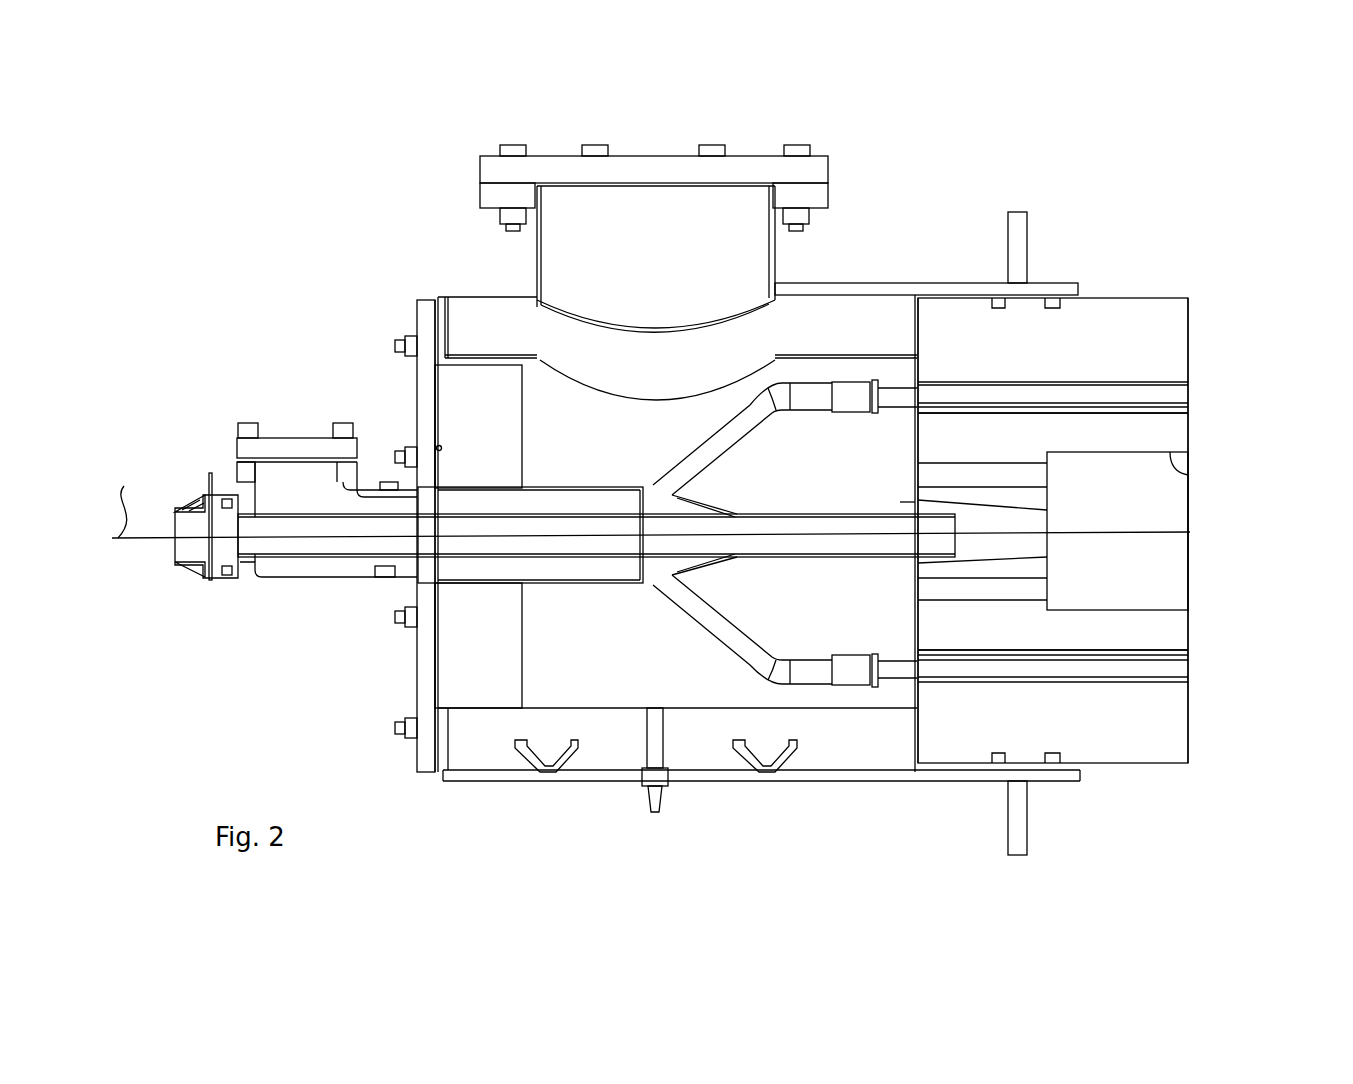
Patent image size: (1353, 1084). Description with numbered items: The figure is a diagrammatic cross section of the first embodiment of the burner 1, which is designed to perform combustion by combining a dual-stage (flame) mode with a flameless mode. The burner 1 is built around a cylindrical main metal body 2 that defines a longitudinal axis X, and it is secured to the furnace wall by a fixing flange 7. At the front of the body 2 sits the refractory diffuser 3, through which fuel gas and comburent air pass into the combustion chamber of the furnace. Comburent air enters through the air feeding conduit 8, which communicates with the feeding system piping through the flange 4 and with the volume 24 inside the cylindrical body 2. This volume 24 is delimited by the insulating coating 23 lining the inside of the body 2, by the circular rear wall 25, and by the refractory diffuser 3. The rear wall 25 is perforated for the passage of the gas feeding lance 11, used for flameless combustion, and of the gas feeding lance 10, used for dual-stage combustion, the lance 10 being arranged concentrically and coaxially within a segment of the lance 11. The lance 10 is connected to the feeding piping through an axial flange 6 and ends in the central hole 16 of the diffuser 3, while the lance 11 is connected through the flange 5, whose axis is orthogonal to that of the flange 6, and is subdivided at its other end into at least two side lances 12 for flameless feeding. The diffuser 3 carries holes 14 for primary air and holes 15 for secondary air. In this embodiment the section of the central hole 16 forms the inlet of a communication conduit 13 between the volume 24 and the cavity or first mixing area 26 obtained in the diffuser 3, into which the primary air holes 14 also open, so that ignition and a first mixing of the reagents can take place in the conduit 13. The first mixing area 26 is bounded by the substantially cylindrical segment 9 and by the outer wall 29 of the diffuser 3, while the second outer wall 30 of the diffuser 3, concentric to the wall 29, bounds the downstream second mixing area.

The burner 1 is at (905, 137).
The main metal body 2 is at (404, 290).
The refractory diffuser 3 is at (1085, 320).
The flange 4 is at (512, 182).
The flange 5 is at (258, 440).
The axial flange 6 is at (190, 562).
The fixing flange 7 is at (1020, 232).
The air feeding conduit 8 is at (600, 252).
The cylindrical segment 9 is at (1175, 457).
The gas feeding lance 10 is at (305, 545).
The gas feeding lance 11 is at (475, 502).
The side lances 12 is at (722, 440).
The communication conduit 13 is at (1022, 542).
The holes 14 is at (990, 467).
The holes 15 is at (1190, 385).
The central hole 16 is at (915, 500).
The insulating coating 23 is at (480, 660).
The volume 24 is at (628, 460).
The rear wall 25 is at (428, 328).
The first mixing area 26 is at (1116, 561).
The outer wall 29 is at (1047, 497).
The outer wall 30 is at (1195, 315).